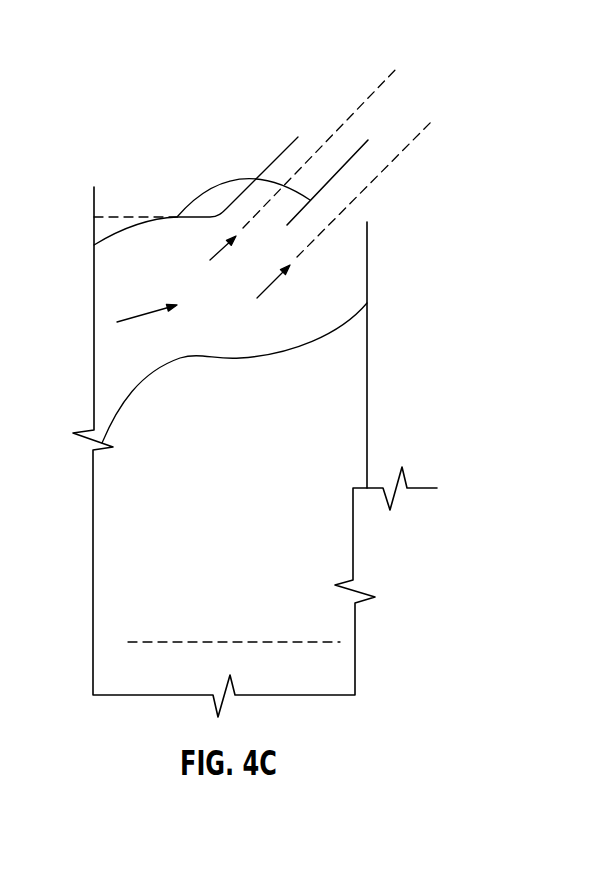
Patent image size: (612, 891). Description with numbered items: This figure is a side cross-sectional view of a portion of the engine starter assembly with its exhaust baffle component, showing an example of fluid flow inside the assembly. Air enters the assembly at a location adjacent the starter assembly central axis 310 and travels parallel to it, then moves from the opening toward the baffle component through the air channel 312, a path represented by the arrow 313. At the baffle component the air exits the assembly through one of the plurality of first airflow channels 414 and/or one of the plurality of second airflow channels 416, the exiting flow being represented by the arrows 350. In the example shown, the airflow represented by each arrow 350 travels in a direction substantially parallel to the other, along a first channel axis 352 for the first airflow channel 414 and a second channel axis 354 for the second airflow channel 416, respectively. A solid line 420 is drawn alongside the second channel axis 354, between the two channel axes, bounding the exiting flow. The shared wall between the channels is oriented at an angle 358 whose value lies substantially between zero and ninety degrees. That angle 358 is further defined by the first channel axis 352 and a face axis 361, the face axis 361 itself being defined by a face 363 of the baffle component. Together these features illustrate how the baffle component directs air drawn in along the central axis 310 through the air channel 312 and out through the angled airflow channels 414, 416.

The starter assembly central axis 310 is at (260, 641).
The air channel 312 is at (205, 346).
The arrow 313 is at (150, 310).
The arrows 350 is at (210, 260).
The first channel axis 352 is at (368, 98).
The second channel axis 354 is at (402, 152).
The angle 358 is at (213, 182).
The face axis 361 is at (128, 215).
The face 363 is at (167, 216).
The first airflow channel 414 is at (288, 161).
The second airflow channel 416 is at (366, 209).
The divider wall 420 is at (336, 170).